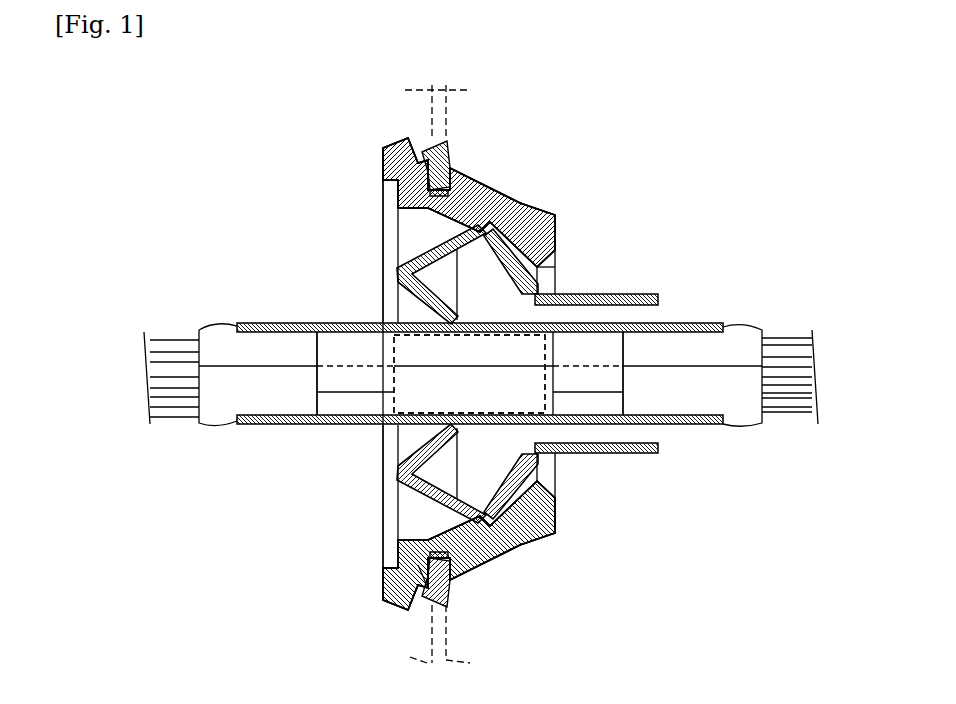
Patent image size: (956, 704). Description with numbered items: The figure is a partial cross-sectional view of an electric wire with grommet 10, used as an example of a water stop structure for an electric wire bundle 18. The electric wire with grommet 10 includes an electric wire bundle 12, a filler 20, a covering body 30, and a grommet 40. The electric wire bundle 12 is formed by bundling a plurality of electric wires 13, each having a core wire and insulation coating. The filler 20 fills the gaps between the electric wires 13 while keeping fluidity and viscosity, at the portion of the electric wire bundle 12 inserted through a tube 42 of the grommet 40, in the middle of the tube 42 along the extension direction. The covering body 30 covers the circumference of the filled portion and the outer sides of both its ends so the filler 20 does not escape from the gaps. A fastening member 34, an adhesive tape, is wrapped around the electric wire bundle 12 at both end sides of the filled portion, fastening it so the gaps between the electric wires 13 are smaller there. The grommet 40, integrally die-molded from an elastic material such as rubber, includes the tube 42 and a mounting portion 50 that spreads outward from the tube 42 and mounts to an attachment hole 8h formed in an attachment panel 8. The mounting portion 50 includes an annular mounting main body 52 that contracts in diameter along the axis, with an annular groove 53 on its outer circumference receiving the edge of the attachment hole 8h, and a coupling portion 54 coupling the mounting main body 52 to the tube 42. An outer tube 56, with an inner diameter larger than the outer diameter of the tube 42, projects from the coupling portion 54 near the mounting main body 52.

The attachment panel 8 is at (446, 118).
The attachment hole 8h is at (399, 136).
The electric wire with grommet 10 is at (568, 185).
The electric wire bundle 12 is at (785, 337).
The electric wire 13 is at (795, 394).
The electric wire bundle 18 is at (306, 292).
The filler 20 is at (560, 282).
The covering body 30 is at (528, 402).
The fastening member 34 is at (316, 405).
The grommet 40 is at (373, 145).
The tube 42 is at (712, 322).
The mounting portion 50 is at (558, 232).
The mounting main body 52 is at (492, 200).
The annular groove 53 is at (445, 175).
The coupling portion 54 is at (410, 264).
The outer tube 56 is at (645, 293).